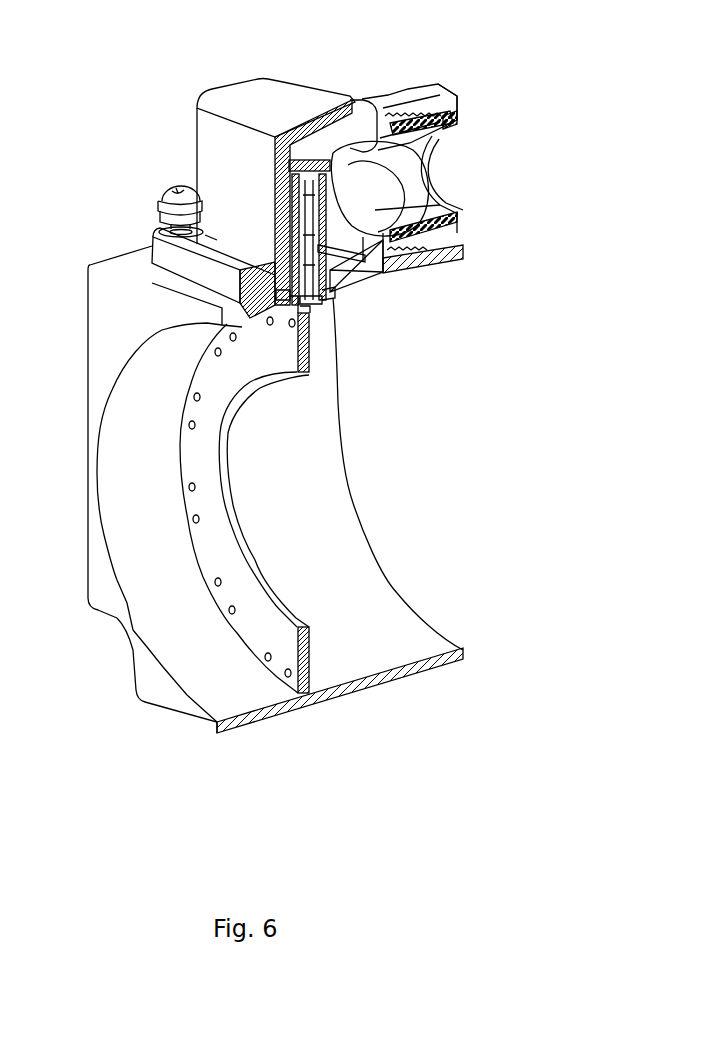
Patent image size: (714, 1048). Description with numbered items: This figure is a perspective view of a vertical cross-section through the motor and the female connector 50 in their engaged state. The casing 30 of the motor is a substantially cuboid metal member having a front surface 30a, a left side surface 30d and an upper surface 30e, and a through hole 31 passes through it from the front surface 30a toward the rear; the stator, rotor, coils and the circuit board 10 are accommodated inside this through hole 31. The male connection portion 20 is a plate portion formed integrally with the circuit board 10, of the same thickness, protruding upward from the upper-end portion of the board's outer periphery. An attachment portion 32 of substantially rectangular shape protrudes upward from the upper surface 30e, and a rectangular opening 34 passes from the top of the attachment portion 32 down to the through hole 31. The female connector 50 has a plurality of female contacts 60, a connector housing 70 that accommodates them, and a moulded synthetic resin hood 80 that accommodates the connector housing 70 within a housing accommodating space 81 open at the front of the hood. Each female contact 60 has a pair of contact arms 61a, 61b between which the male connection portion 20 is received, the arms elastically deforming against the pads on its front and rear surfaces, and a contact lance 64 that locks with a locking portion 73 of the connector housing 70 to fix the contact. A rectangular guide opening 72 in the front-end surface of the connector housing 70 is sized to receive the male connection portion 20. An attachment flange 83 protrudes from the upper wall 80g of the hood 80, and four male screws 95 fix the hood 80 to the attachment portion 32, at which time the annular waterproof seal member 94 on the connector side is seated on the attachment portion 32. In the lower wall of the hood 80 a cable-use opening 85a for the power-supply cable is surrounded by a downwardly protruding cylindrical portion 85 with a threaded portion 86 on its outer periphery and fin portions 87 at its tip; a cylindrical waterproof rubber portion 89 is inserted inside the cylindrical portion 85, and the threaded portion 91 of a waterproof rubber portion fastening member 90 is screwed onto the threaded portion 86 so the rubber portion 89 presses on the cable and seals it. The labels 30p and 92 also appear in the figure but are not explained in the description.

The circuit board 10 is at (181, 463).
The male connection portion 20 is at (312, 370).
The casing 30 is at (274, 481).
The front surface 30a is at (168, 702).
The left side surface 30d is at (88, 545).
The upper surface 30e is at (127, 262).
The bottom plate of housing 30p is at (330, 702).
The through hole 31 is at (395, 605).
The attachment portion 32 is at (188, 282).
The opening 34 is at (290, 303).
The female connector 50 is at (434, 139).
The female contacts 60 is at (345, 272).
The contact arm 61a is at (322, 304).
The contact arm 61b is at (330, 300).
The contact lance 64 is at (327, 290).
The connector housing 70 is at (327, 180).
The guide opening 72 is at (318, 318).
The locking portions 73 is at (352, 214).
The hood 80 is at (261, 169).
The upper wall 80g is at (230, 148).
The housing accommodating space 81 is at (320, 143).
The attachment flange 83 is at (217, 235).
The cylindrical portion 85 is at (370, 148).
The cable-use opening 85a is at (375, 208).
The threaded portion 86 is at (388, 95).
The fin portions 87 is at (443, 90).
The waterproof rubber portion 89 is at (458, 210).
The waterproof rubber portion fastening member 90 is at (447, 91).
The threaded portion 91 is at (447, 122).
The thread 92 is at (408, 89).
The waterproof seal member 94 is at (276, 297).
The male screws 95 is at (173, 188).